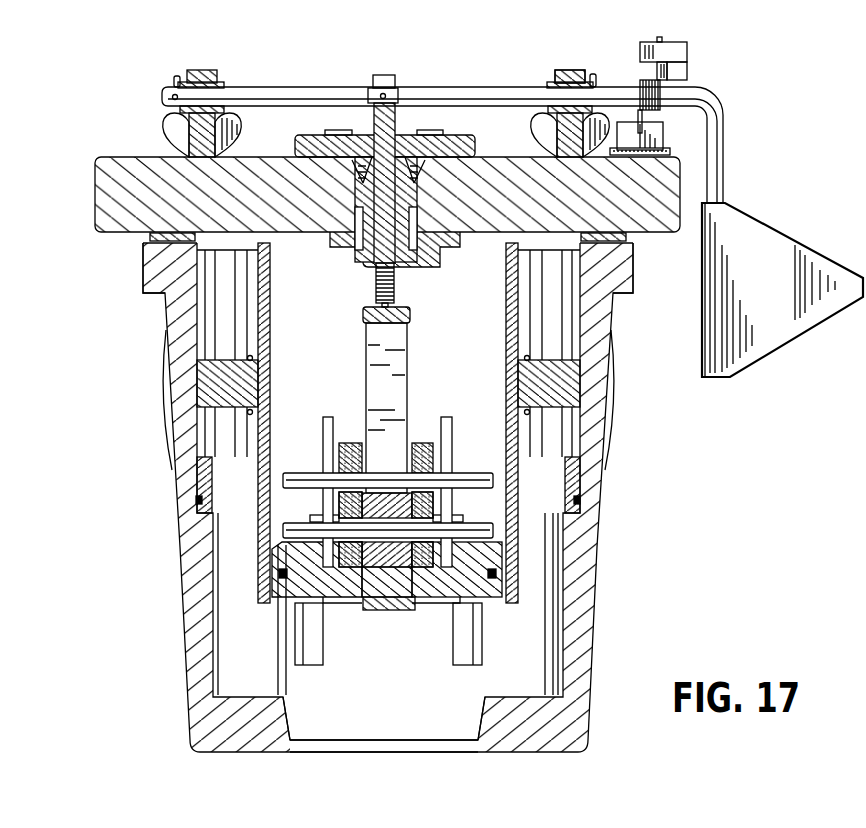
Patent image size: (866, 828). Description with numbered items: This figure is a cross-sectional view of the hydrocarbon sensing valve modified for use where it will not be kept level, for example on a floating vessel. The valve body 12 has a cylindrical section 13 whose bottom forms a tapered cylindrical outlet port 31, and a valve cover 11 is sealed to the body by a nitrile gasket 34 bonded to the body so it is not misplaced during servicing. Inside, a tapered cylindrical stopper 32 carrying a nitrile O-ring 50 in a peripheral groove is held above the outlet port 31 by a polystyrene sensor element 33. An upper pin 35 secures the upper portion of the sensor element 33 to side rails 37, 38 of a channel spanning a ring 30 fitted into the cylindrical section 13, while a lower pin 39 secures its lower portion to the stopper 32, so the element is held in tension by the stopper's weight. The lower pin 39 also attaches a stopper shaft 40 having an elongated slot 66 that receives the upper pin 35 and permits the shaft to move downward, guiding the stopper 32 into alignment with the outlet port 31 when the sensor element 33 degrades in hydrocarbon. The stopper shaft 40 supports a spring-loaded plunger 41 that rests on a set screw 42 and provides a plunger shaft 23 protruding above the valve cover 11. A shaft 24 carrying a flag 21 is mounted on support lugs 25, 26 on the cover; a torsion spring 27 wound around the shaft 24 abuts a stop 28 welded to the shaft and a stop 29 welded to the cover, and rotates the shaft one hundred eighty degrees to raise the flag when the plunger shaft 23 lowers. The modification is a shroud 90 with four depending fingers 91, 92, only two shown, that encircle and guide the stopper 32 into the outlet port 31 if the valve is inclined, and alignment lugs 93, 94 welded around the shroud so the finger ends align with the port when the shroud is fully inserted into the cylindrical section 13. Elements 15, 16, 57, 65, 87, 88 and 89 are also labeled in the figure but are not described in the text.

The valve cover 11 is at (120, 165).
The valve body 12 is at (158, 434).
The cylindrical section 13 is at (198, 661).
The outer surface 15 is at (165, 396).
The upper flange 16 is at (150, 282).
The flag 21 is at (780, 334).
The plunger shaft 23 is at (390, 75).
The shaft 24 is at (318, 95).
The support lug 25 is at (206, 70).
The support lug 26 is at (572, 68).
The torsion spring 27 is at (642, 82).
The stop 28 is at (682, 44).
The stop 29 is at (665, 136).
The ring 30 is at (203, 483).
The tapered cylindrical outlet port 31 is at (290, 716).
The tapered cylindrical stopper 32 is at (341, 588).
The polystyrene sensor element 33 is at (417, 447).
The nitrile gasket 34 is at (150, 237).
The upper pin 35 is at (496, 481).
The side rail 37 is at (330, 462).
The side rail 38 is at (452, 460).
The lower pin 39 is at (496, 532).
The stopper shaft 40 is at (405, 358).
The spring-loaded plunger 41 is at (430, 262).
The set screw 42 is at (378, 285).
The nitrile O-ring 50 is at (280, 574).
The spacer 57 is at (445, 562).
The set screws 65 is at (196, 500).
The elongated slot 66 is at (370, 371).
The nut 87 is at (556, 78).
The pin 88 is at (593, 73).
The pin 89 is at (176, 78).
The modified shroud 90 is at (600, 324).
The depending finger 91 is at (300, 636).
The depending finger 92 is at (475, 628).
The alignment lug 93 is at (200, 381).
The alignment lug 94 is at (585, 408).